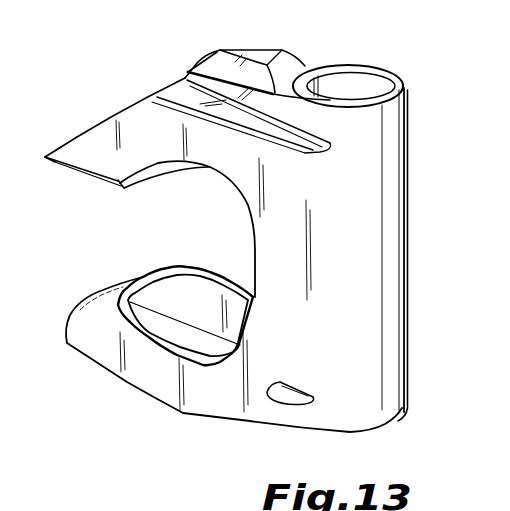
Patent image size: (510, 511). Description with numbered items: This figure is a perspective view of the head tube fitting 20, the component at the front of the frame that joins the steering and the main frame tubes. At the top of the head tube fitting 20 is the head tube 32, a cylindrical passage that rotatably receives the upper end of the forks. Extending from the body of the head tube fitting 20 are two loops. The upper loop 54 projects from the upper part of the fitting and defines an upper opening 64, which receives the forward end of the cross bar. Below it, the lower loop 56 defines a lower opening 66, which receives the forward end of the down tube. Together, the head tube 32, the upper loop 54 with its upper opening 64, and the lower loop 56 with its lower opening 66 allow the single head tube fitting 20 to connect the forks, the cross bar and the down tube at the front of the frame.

The head tube fitting 20 is at (117, 390).
The head tube 32 is at (353, 80).
The upper loop 54 is at (107, 137).
The lower loop 56 is at (90, 340).
The upper opening 64 is at (165, 169).
The lower opening 66 is at (184, 300).